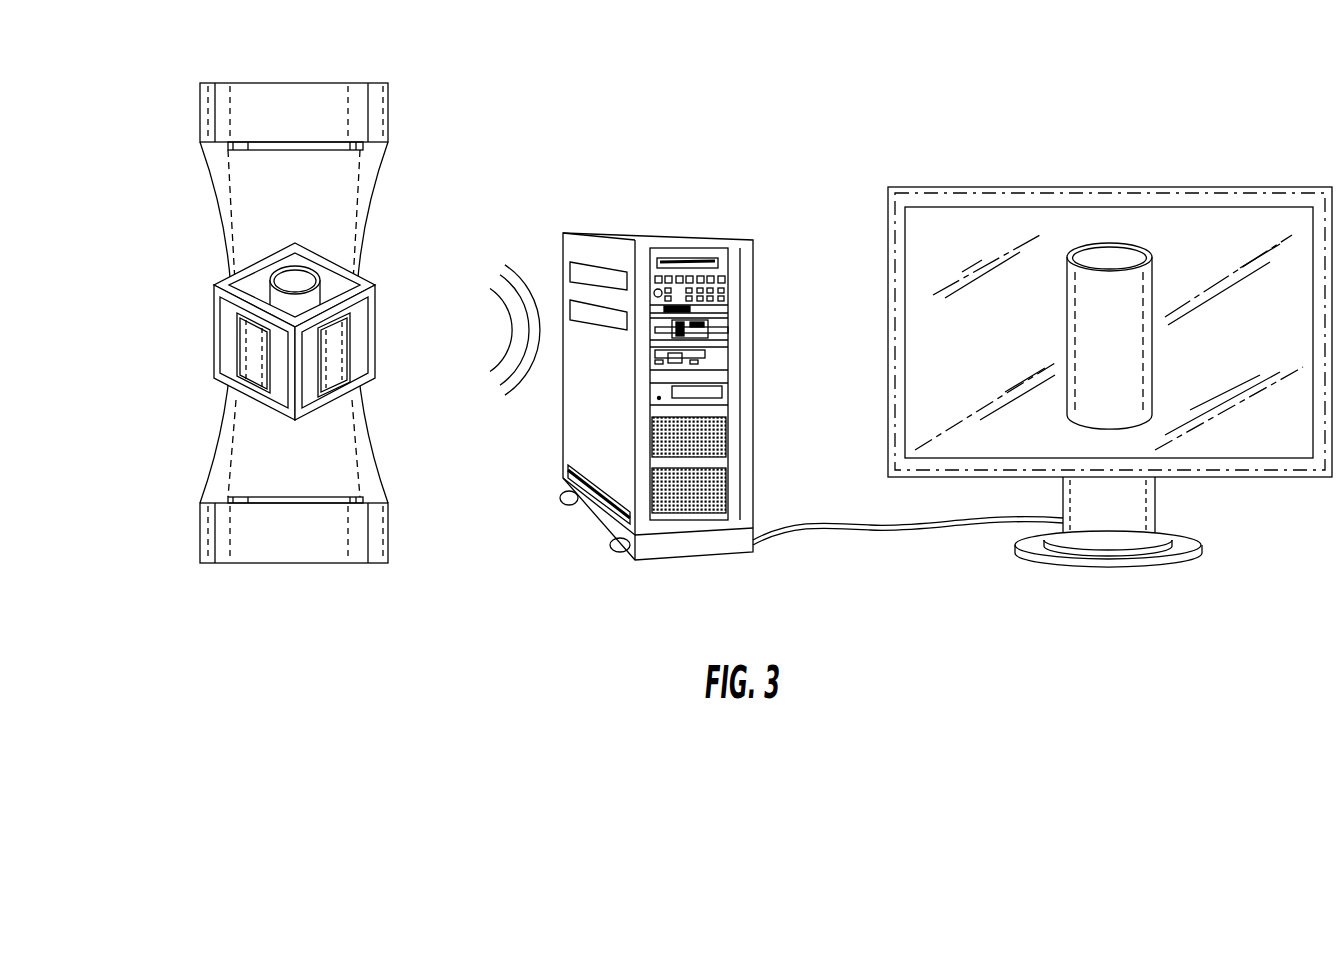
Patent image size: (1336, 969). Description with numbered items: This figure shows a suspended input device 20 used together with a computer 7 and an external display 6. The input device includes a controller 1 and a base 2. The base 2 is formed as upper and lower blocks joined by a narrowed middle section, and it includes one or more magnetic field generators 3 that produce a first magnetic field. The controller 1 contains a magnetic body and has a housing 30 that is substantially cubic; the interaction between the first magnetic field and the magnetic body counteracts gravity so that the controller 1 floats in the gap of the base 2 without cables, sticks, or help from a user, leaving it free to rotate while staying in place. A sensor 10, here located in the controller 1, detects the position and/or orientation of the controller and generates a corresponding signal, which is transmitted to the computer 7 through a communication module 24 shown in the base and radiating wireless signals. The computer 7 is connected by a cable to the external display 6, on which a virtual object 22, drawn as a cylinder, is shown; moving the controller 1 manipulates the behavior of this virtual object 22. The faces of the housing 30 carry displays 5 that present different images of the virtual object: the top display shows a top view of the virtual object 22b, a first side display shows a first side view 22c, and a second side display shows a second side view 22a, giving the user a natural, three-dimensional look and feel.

The controller 1 is at (396, 279).
The base 2 is at (155, 122).
The magnetic field generator 3 is at (363, 146).
The displays 5 is at (341, 280).
The external display 6 is at (1300, 186).
The computer 7 is at (632, 232).
The sensor 10 is at (279, 177).
The suspended input device 20 is at (215, 643).
The virtual object 22 is at (1071, 273).
The second side view of the virtual object 22a is at (343, 338).
The top view of the virtual object 22b is at (298, 278).
The first side view of the virtual object 22c is at (257, 362).
The communication module 24 is at (397, 505).
The housing 30 is at (213, 307).